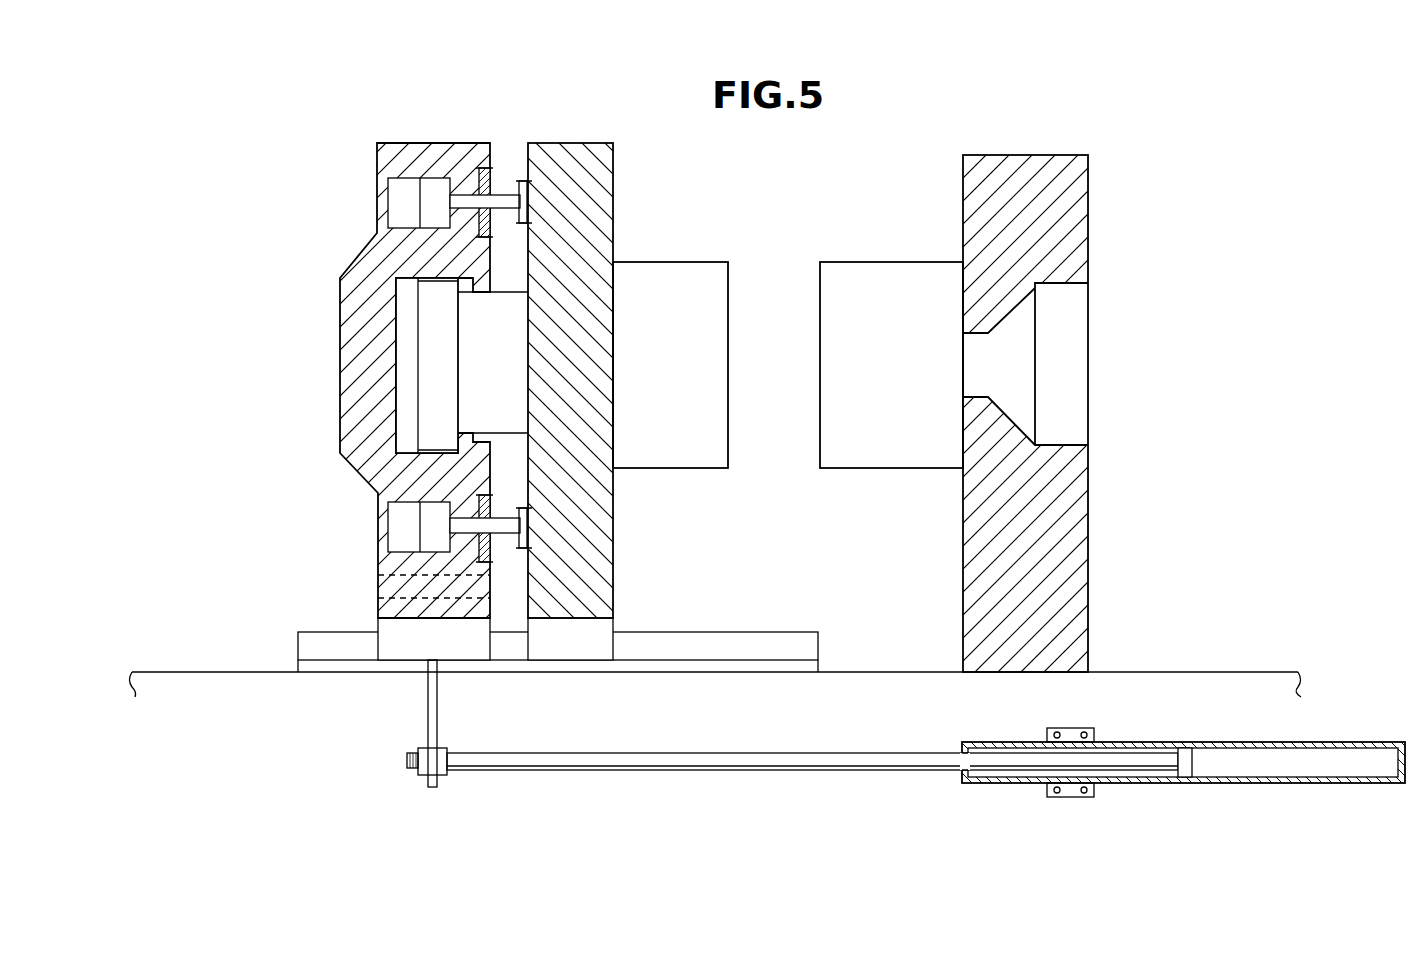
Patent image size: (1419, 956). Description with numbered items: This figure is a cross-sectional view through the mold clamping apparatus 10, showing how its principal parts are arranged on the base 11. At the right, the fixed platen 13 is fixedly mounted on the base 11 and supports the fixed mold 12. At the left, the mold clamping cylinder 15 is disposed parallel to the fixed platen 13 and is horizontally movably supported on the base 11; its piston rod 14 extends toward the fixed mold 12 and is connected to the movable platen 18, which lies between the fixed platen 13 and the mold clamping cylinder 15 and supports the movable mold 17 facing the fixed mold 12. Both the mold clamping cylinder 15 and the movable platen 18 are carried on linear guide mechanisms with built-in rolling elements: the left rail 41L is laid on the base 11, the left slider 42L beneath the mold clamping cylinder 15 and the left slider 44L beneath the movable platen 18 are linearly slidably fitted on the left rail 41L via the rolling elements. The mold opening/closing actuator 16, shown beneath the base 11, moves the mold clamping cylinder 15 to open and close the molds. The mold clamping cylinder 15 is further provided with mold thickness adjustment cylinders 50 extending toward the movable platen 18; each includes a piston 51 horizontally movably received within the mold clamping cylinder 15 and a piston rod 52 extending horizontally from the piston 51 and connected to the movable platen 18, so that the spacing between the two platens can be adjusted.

The mold clamping apparatus 10 is at (1145, 152).
The base 11 is at (1208, 672).
The fixed mold 12 is at (893, 275).
The fixed platen 13 is at (1032, 160).
The piston rod 14 is at (482, 357).
The mold clamping cylinder 15 is at (435, 148).
The mold opening/closing actuator 16 is at (1268, 783).
The movable mold 17 is at (678, 275).
The movable platen 18 is at (577, 150).
The left rail 41L is at (767, 642).
The left slider 42L is at (390, 625).
The left slider 44L is at (608, 625).
The mold thickness adjustment cylinder 50 is at (370, 170).
The piston 51 is at (432, 200).
The piston rod 52 is at (508, 200).